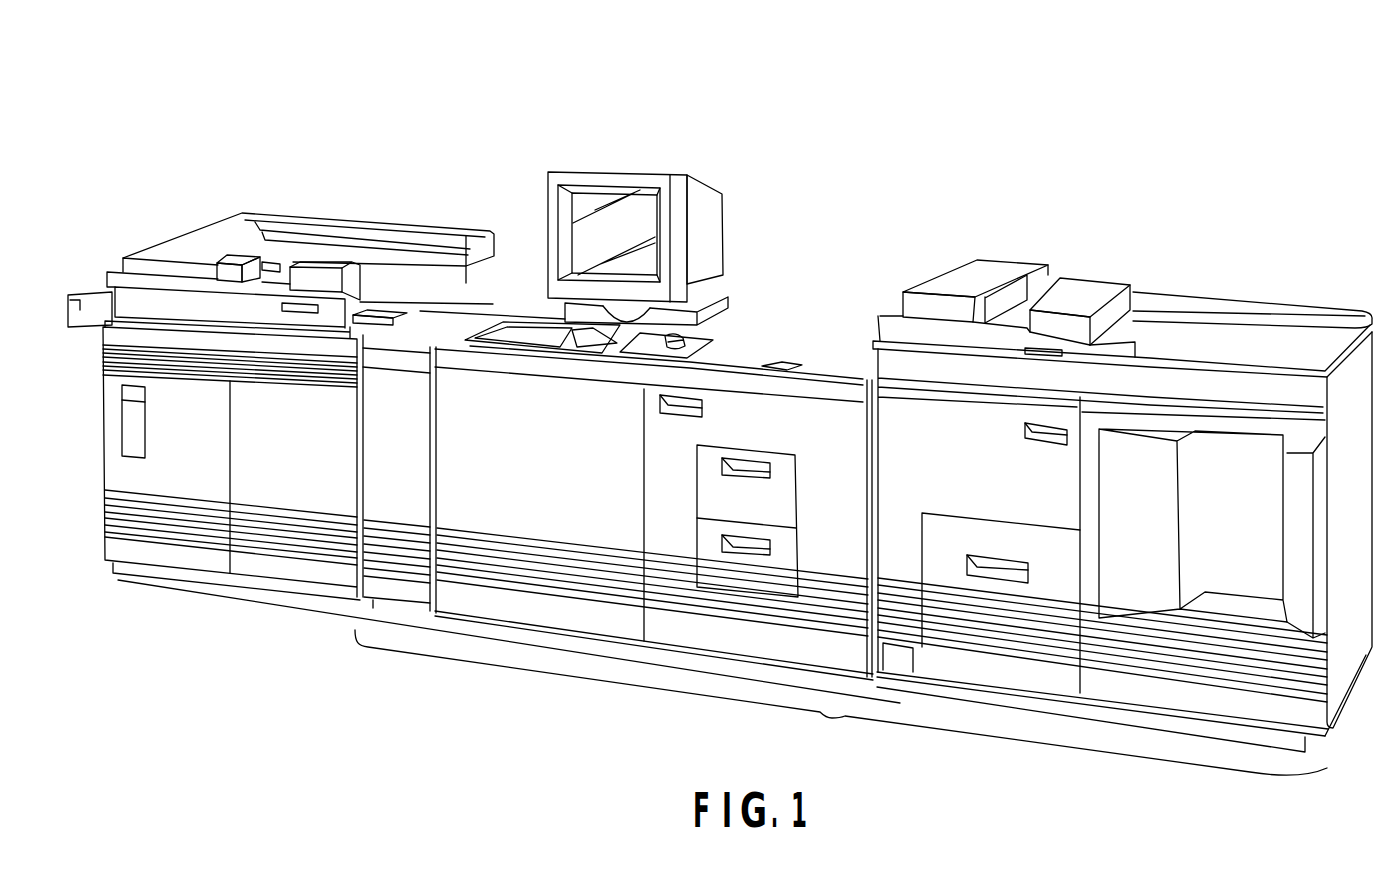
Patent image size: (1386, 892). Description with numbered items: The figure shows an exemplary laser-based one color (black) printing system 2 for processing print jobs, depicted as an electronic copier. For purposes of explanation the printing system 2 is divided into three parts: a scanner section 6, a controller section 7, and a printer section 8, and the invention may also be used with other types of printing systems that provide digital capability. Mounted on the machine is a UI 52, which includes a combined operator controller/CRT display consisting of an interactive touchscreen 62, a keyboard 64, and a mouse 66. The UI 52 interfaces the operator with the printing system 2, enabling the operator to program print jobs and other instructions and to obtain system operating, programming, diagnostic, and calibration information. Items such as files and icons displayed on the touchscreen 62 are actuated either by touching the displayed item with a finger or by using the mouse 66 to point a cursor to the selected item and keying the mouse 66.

The printing system 2 is at (862, 145).
The scanner section 6 is at (362, 198).
The controller section 7 is at (96, 463).
The printer section 8 is at (838, 750).
The UI 52 is at (628, 157).
The interactive touchscreen 62 is at (583, 242).
The keyboard 64 is at (540, 337).
The mouse 66 is at (673, 333).